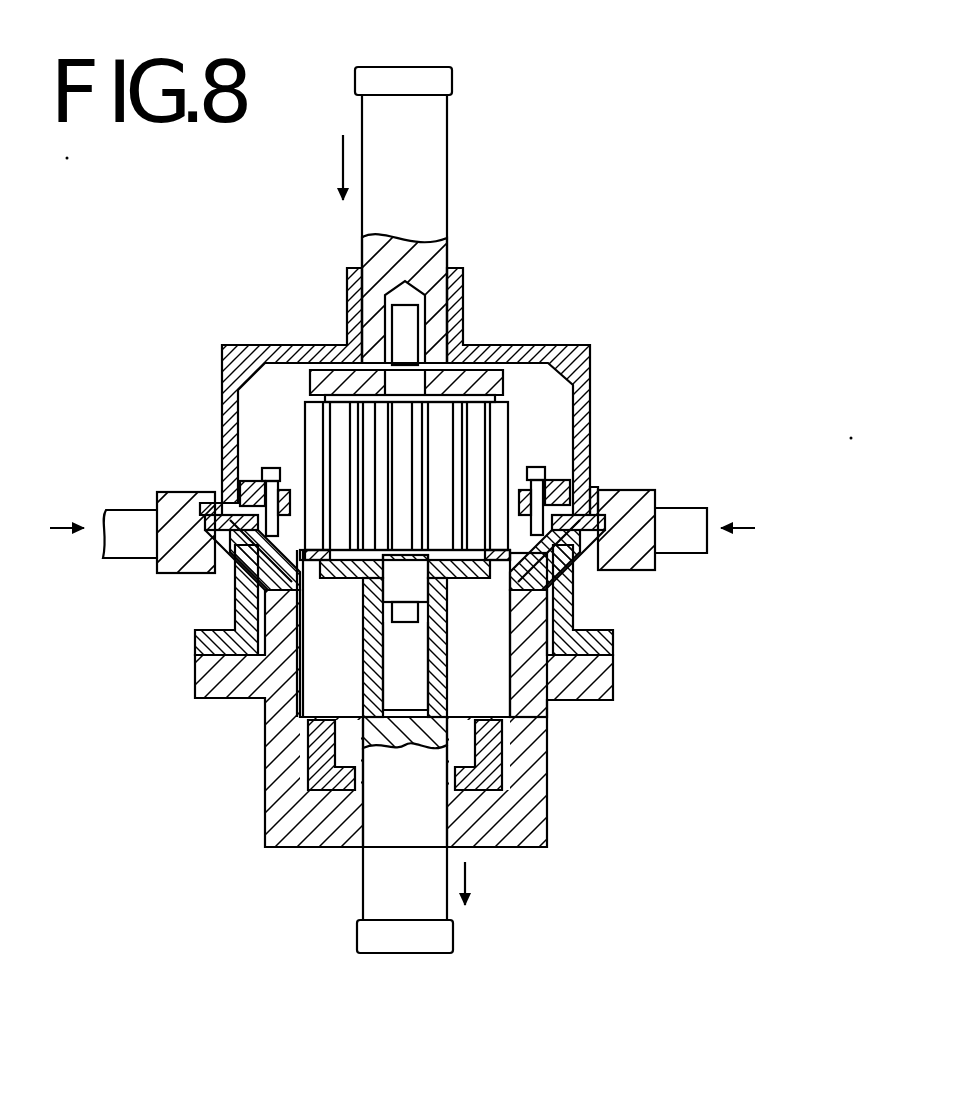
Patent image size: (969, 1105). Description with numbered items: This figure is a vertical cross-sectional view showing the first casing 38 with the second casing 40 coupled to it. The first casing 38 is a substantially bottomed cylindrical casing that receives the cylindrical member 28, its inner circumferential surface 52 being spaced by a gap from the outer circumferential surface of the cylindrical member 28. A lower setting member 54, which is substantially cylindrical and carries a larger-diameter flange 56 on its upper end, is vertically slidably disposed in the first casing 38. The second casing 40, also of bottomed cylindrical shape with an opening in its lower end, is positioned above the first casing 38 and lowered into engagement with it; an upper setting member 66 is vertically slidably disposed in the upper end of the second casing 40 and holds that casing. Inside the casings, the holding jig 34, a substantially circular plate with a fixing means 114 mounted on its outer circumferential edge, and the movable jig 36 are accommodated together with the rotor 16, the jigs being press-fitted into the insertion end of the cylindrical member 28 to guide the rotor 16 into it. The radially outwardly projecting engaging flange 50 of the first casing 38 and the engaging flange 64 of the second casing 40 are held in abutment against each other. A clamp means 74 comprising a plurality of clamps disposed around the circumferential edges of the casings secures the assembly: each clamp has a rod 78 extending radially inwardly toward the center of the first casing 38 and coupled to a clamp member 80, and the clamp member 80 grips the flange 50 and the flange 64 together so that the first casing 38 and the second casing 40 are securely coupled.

The upper setting member 66 is at (436, 168).
The second casing 40 is at (584, 326).
The rotor 16 is at (524, 412).
The fixing means 114 is at (560, 462).
The clamp means 74 is at (128, 488).
The rod 78 is at (128, 560).
The clamp member 80 is at (176, 492).
The engaging flange 64 is at (182, 492).
The engaging flange 50 is at (200, 568).
The holding jig 34 is at (291, 506).
The movable jig 36 is at (312, 577).
The larger-diameter flange 56 is at (468, 575).
The inner circumferential surface 52 is at (525, 716).
The cylindrical member 28 is at (295, 673).
The first casing 38 is at (642, 724).
The lower setting member 54 is at (366, 885).